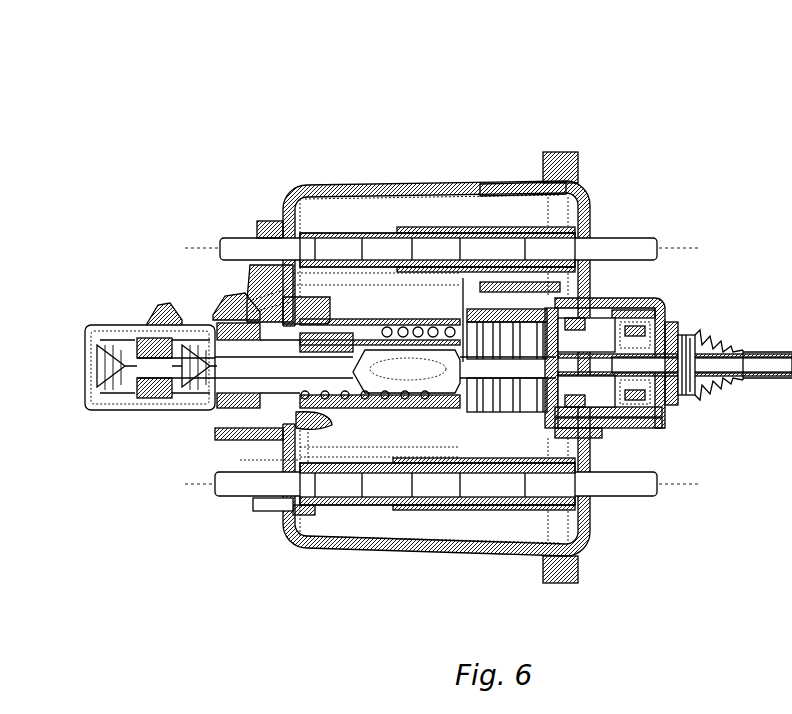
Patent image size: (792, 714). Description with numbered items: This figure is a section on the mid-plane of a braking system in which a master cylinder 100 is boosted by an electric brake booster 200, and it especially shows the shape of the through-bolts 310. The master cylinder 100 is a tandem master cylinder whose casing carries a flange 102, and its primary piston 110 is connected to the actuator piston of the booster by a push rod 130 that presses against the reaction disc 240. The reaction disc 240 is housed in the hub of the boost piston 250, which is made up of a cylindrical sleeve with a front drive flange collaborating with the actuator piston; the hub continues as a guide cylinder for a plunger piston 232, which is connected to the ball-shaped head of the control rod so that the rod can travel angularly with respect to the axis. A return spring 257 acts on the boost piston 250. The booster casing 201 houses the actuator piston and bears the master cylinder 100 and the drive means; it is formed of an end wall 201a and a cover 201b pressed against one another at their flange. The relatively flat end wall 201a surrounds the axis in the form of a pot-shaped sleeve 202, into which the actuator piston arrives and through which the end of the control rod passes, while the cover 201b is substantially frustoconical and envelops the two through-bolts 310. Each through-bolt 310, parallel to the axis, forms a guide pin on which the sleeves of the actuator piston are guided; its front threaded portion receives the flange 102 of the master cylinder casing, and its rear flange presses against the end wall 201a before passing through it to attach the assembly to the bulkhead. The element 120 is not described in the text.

The master cylinder 100 is at (134, 228).
The flange 102 is at (247, 268).
The primary piston 110 is at (278, 400).
The connector body 120 is at (210, 410).
The push rod 130 is at (590, 437).
The electric brake booster 200 is at (416, 130).
The casing 201 is at (630, 77).
The end wall 201a is at (575, 168).
The cover 201b is at (480, 184).
The sleeve 202 is at (640, 300).
The plunger piston 232 is at (672, 312).
The reaction disc 240 is at (558, 352).
The boost piston 250 is at (522, 440).
The return spring 257 is at (447, 360).
The through-bolt 310 is at (603, 224).